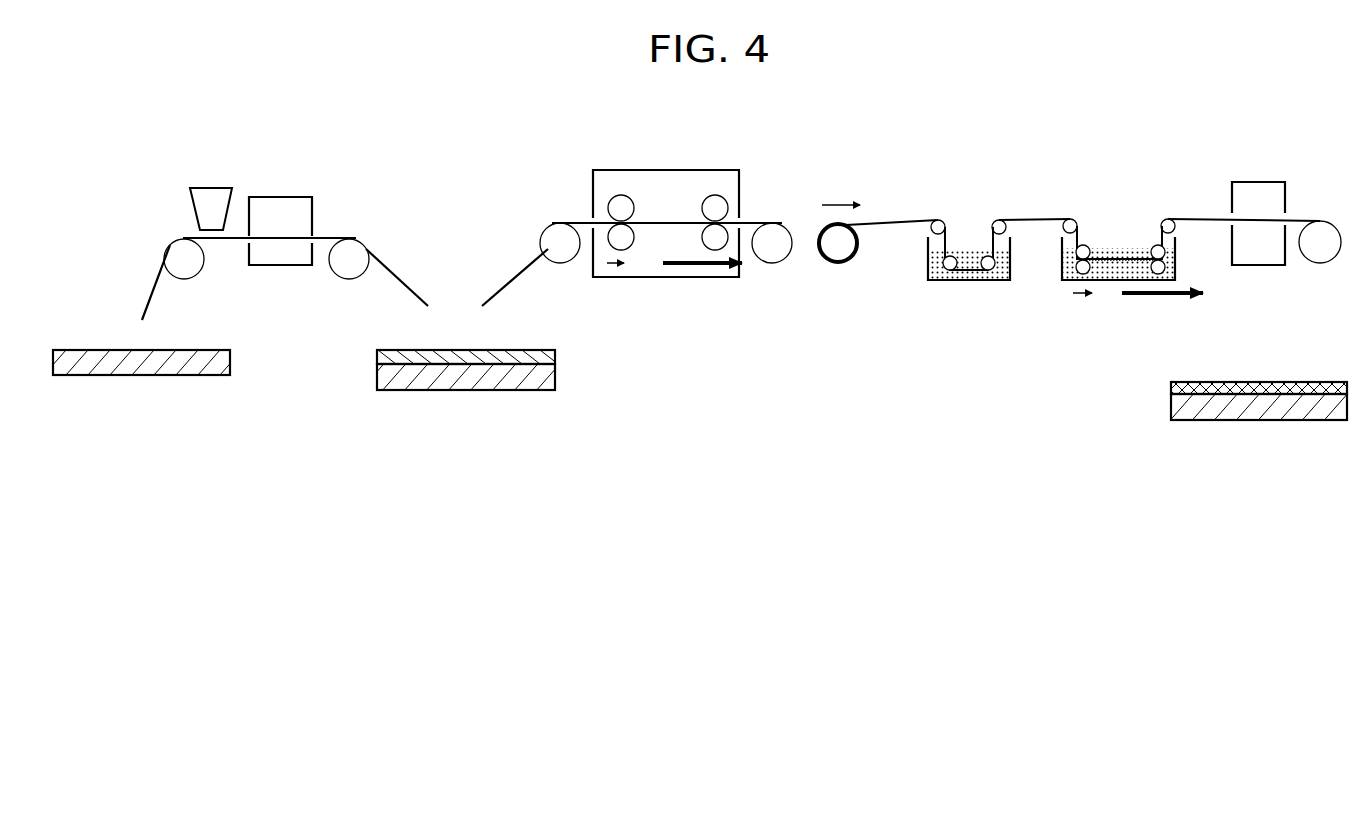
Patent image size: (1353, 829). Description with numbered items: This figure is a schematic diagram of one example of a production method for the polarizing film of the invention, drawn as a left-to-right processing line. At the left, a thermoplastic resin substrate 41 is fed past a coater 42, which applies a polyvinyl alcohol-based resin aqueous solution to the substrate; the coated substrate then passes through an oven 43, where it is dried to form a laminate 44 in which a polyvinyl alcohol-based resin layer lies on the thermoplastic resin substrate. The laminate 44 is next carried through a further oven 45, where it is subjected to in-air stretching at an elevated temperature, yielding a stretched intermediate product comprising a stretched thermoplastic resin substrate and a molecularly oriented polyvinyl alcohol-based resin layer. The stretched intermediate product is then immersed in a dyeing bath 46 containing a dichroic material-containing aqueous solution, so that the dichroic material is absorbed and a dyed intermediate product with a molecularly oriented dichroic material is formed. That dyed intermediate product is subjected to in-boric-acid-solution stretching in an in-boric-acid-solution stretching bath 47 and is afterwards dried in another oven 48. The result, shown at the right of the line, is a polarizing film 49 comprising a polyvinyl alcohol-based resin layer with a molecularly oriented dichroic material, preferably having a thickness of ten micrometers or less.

The thermoplastic resin substrate 41 is at (168, 375).
The coater 42 is at (212, 187).
The oven 43 is at (282, 197).
The laminate 44 is at (467, 391).
The oven 45 is at (694, 169).
The dyeing bath 46 is at (965, 258).
The in-boric-acid-solution stretching bath 47 is at (1118, 248).
The oven 48 is at (1257, 182).
The polarizing film 49 is at (1262, 381).